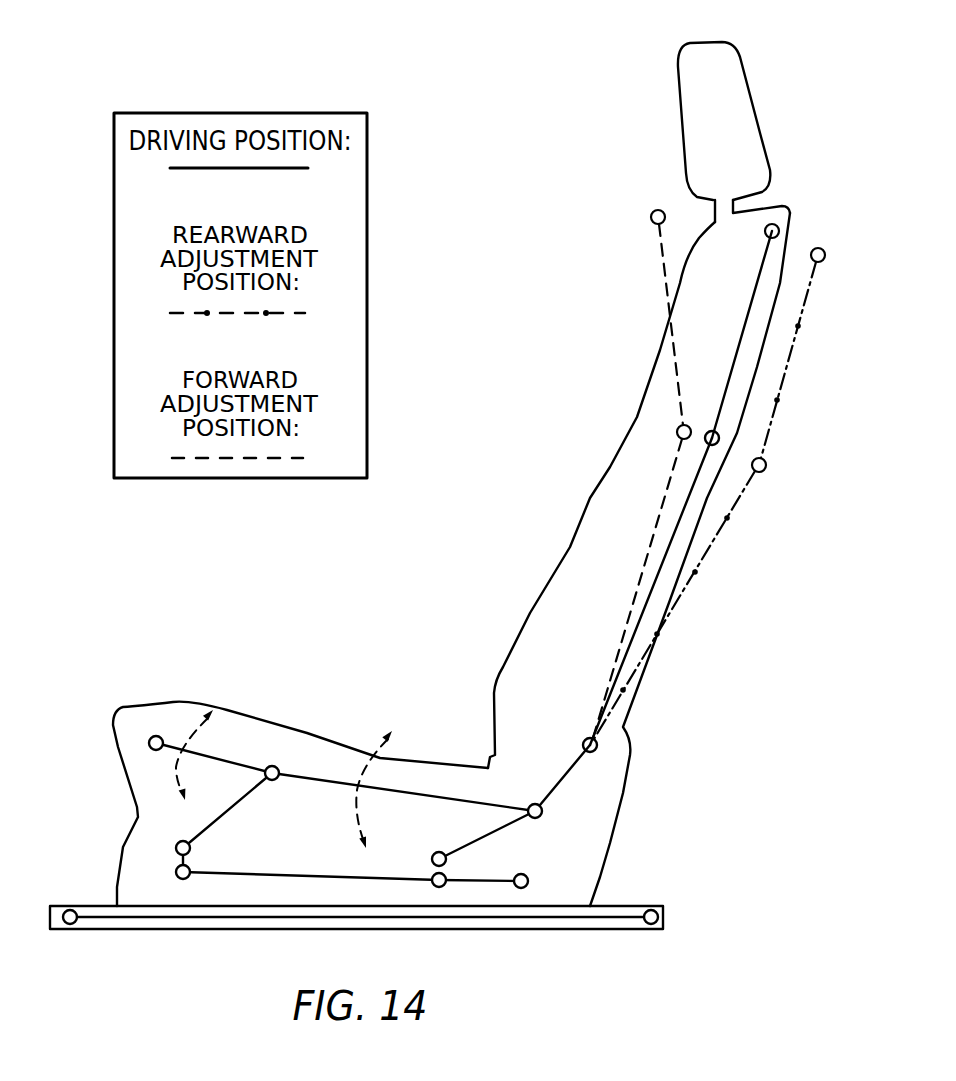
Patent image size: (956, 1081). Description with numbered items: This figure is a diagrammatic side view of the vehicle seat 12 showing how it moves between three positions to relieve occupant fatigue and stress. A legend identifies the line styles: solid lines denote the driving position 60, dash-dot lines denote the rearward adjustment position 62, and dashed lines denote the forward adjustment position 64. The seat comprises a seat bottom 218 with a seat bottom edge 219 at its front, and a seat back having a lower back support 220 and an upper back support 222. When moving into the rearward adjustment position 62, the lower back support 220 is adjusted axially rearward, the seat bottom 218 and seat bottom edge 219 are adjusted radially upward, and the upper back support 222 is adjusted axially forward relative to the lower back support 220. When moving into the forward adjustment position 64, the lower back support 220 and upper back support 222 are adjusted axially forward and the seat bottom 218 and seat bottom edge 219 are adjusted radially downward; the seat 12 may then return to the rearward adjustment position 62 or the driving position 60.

The vehicle seat 12 is at (597, 94).
The seat bottom edge 219 is at (106, 748).
The upper back support 222 is at (803, 226).
The driving position 60 is at (748, 305).
The lower back support 220 is at (702, 546).
The forward adjustment position 64 is at (663, 272).
The rearward adjustment position 62 is at (787, 368).
The seat bottom 218 is at (465, 823).